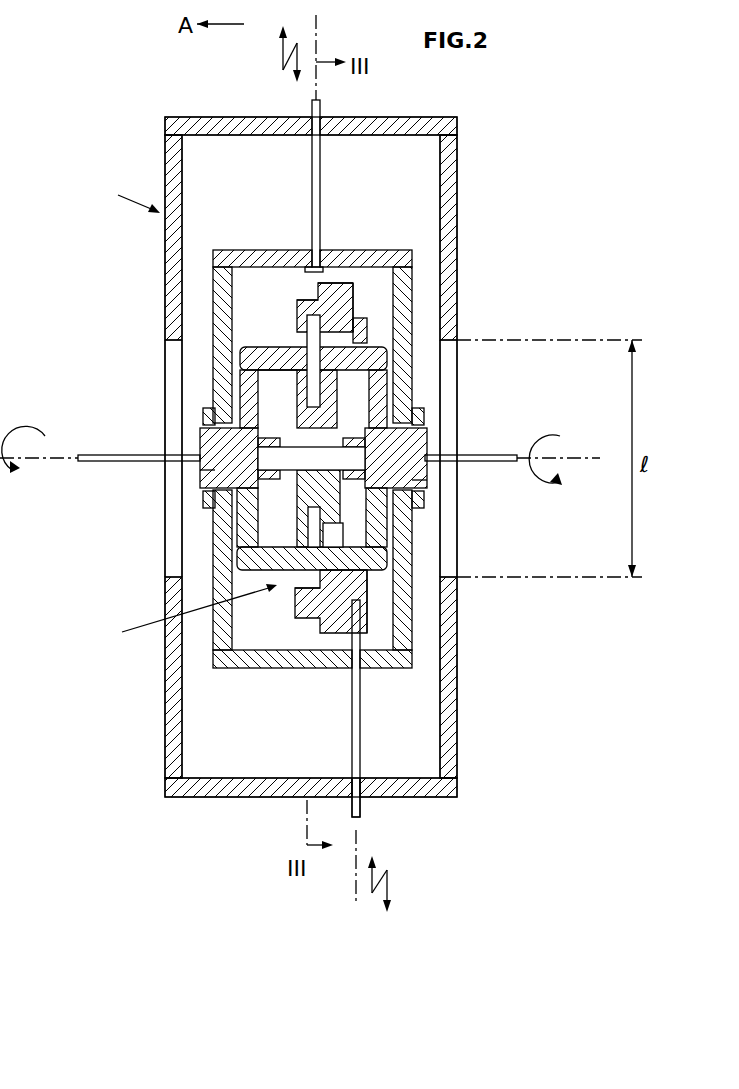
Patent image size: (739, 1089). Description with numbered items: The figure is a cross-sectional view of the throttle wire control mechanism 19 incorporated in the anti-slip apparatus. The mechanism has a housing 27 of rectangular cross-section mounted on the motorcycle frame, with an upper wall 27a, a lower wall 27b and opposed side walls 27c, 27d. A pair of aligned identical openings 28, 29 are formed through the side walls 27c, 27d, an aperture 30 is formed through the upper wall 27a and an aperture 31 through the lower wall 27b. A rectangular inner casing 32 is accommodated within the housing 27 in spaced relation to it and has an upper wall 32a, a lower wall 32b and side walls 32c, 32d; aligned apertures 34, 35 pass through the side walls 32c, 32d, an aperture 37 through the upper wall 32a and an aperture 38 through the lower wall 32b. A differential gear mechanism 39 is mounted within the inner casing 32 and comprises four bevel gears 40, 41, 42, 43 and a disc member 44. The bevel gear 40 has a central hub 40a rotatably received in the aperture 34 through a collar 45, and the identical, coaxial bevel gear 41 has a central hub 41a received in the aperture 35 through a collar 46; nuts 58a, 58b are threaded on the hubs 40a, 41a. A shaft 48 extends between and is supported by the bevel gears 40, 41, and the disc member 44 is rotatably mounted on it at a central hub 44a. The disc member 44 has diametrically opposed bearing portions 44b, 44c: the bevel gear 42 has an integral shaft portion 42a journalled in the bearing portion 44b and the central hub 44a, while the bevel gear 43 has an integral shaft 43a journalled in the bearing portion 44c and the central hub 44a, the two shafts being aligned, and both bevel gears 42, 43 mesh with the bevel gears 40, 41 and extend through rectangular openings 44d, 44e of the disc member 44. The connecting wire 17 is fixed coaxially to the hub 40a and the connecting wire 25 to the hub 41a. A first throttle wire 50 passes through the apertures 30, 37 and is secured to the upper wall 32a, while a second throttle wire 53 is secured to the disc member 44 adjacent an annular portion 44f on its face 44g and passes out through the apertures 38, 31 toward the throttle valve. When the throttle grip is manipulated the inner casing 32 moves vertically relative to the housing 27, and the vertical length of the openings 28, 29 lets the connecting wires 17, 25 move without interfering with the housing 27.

The connecting wire 17 is at (100, 446).
The throttle wire control mechanism 19 is at (127, 191).
The connecting wire 25 is at (580, 458).
The housing 27 is at (457, 220).
The upper wall 27a is at (222, 119).
The lower wall 27b is at (236, 797).
The side wall 27c is at (165, 746).
The side wall 27d is at (457, 736).
The opening 28 is at (182, 342).
The opening 29 is at (445, 340).
The aperture 30 is at (312, 120).
The aperture 31 is at (362, 800).
The inner casing 32 is at (356, 457).
The upper wall 32a is at (335, 252).
The lower wall 32b is at (276, 668).
The side wall 32c is at (221, 250).
The side wall 32d is at (412, 253).
The aperture 34 is at (225, 486).
The aperture 35 is at (425, 447).
The aperture 37 is at (310, 314).
The aperture 38 is at (360, 680).
The differential gear mechanism 39 is at (186, 613).
The bevel gear 40 is at (240, 520).
The central hub 40a is at (210, 470).
The bevel gear 41 is at (375, 487).
The central hub 41a is at (425, 480).
The bevel gear 42 is at (280, 357).
The shaft portion 42a is at (295, 348).
The bevel gear 43 is at (255, 575).
The shaft 43a is at (308, 527).
The disc member 44 is at (320, 628).
The central hub 44a is at (375, 398).
The bearing portion 44b is at (300, 290).
The bearing portion 44c is at (300, 606).
The rectangular opening 44d is at (388, 330).
The rectangular opening 44e is at (362, 582).
The annular portion 44f is at (373, 316).
The face 44g is at (354, 282).
The collar 45 is at (215, 395).
The collar 46 is at (425, 412).
The shaft 48 is at (314, 460).
The first throttle wire 50 is at (318, 33).
The second throttle wire 53 is at (356, 892).
The nut 58a is at (205, 416).
The nut 58b is at (425, 505).